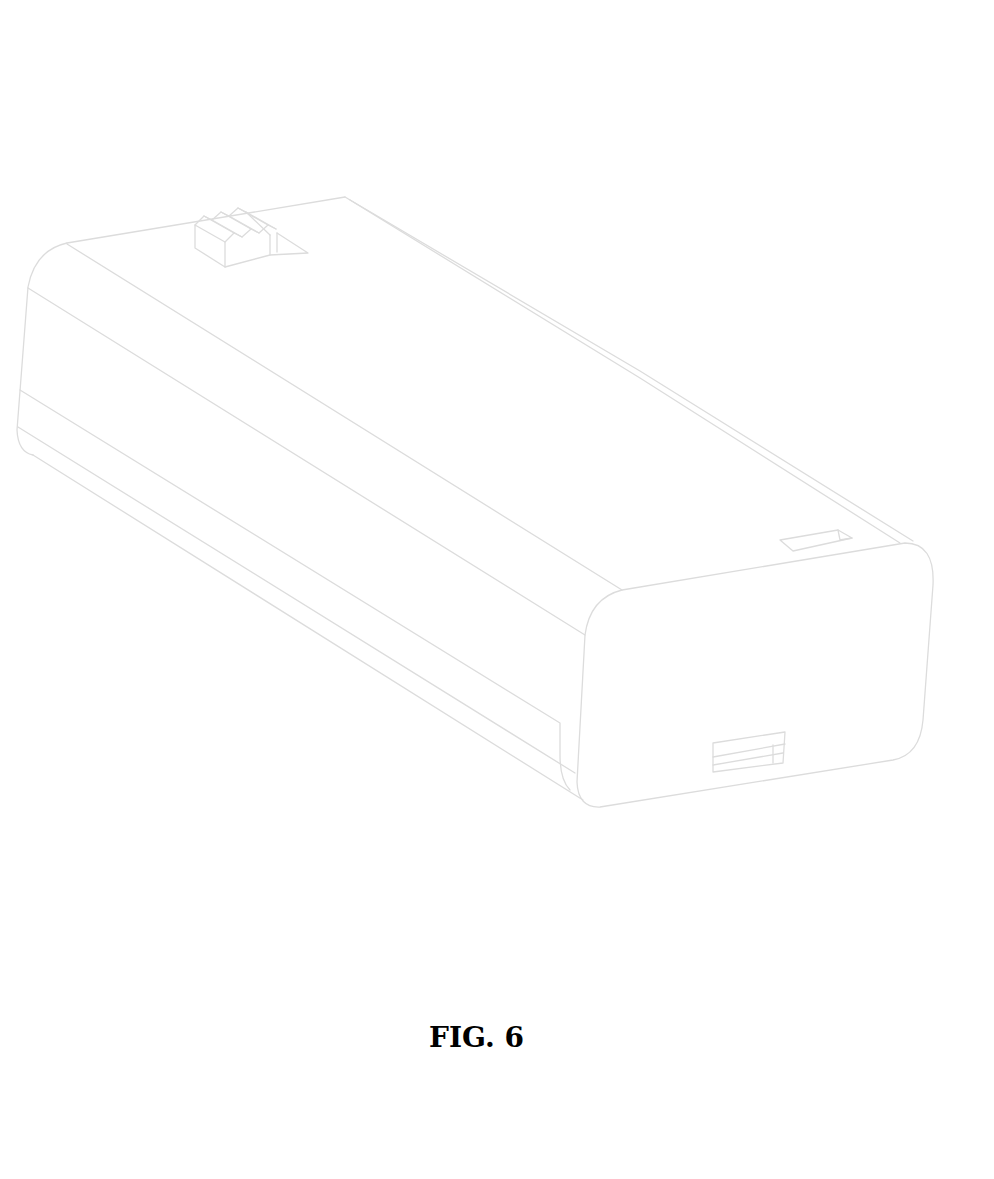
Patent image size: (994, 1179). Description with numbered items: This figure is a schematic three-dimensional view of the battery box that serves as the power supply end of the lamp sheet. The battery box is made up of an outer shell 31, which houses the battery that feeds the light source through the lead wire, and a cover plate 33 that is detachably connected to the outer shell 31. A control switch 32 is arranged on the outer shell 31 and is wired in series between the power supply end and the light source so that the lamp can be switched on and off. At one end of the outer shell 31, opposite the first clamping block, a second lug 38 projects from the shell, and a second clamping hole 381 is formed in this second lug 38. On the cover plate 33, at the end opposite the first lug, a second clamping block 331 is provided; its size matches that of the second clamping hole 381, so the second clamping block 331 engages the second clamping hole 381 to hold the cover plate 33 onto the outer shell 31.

The outer shell 31 is at (562, 408).
The control switch 32 is at (237, 217).
The cover plate 33 is at (272, 572).
The second lug 38 is at (617, 760).
The second clamping hole 381 is at (732, 757).
The second clamping block 331 is at (760, 743).